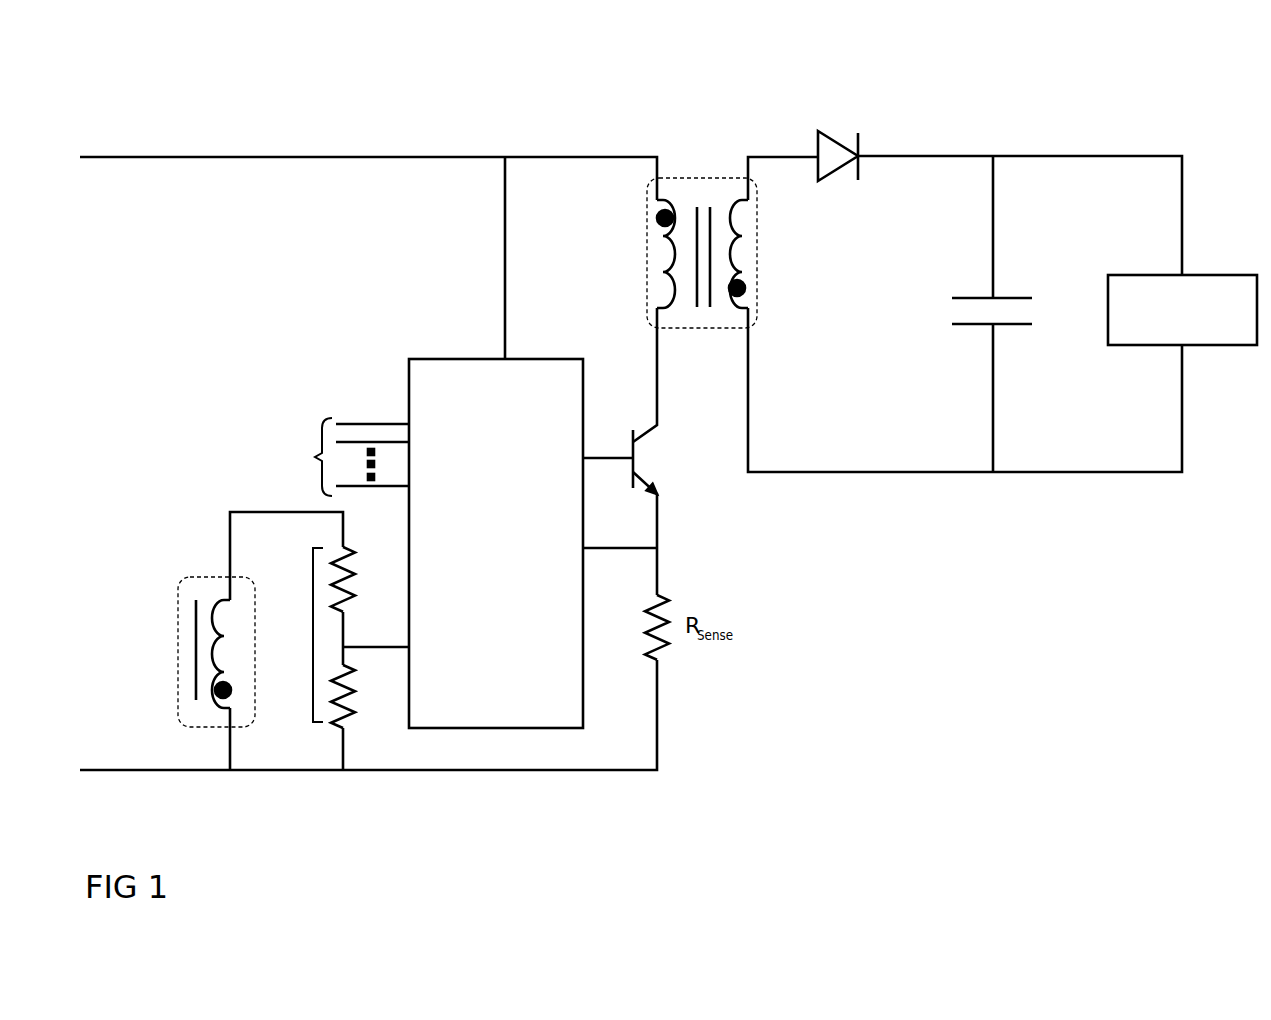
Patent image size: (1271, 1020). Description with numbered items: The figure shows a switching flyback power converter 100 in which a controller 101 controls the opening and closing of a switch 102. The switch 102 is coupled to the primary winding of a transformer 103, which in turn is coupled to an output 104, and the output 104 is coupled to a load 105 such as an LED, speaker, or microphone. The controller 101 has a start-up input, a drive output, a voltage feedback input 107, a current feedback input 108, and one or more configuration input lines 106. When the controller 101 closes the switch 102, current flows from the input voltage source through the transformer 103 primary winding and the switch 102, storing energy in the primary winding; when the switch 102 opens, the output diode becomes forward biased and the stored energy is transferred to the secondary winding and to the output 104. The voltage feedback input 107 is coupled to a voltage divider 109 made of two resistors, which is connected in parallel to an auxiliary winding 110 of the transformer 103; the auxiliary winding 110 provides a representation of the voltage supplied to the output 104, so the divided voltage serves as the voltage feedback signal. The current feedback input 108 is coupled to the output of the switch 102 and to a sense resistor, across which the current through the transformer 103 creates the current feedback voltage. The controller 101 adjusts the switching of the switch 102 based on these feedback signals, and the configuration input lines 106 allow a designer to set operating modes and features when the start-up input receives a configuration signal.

The switching flyback power converter 100 is at (117, 93).
The controller 101 is at (496, 442).
The switch 102 is at (637, 451).
The transformer 103 is at (702, 236).
The output 104 is at (978, 298).
The load 105 is at (1182, 310).
The configuration input lines 106 is at (315, 457).
The VFB input 107 is at (416, 640).
The IFB input 108 is at (586, 540).
The voltage divider 109 is at (313, 641).
The auxiliary winding 110 is at (195, 673).